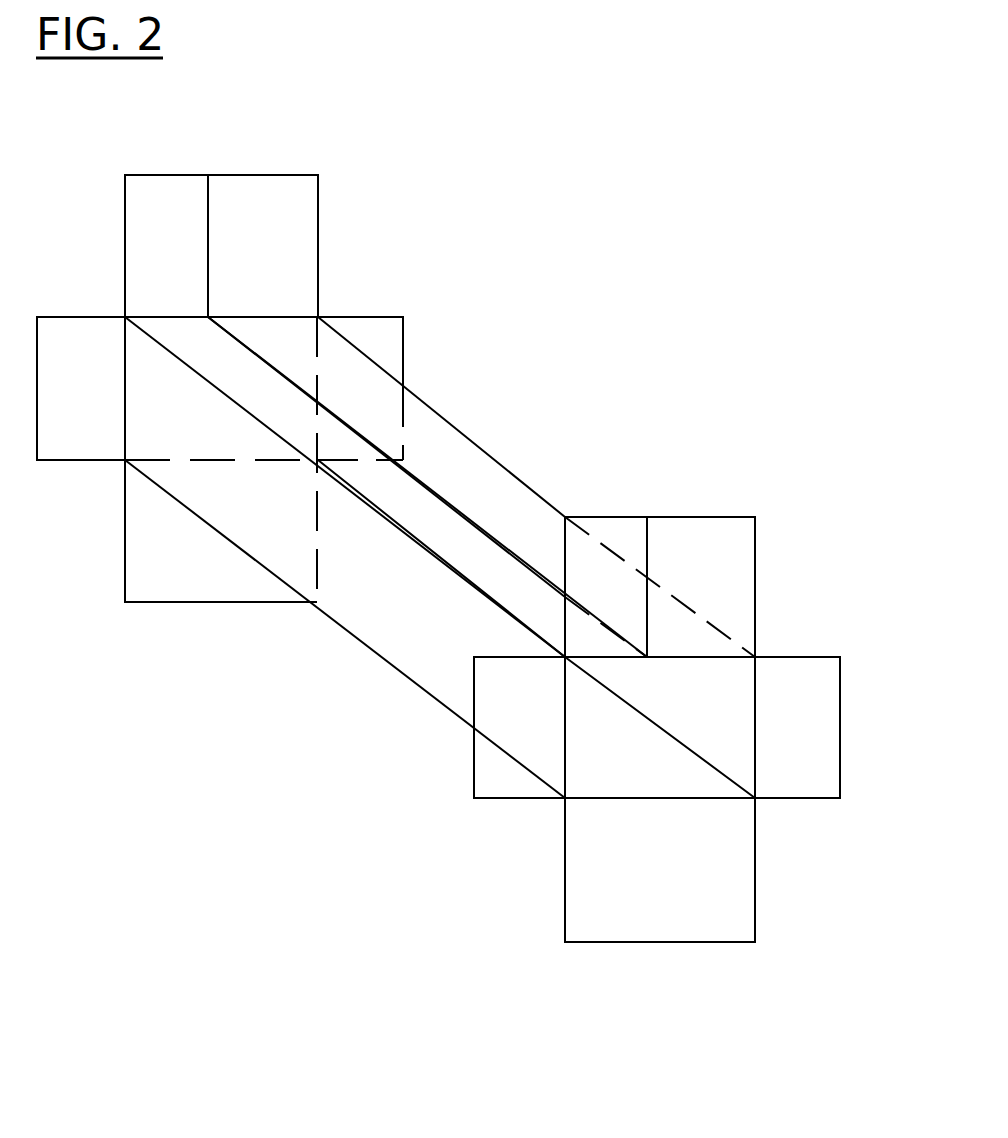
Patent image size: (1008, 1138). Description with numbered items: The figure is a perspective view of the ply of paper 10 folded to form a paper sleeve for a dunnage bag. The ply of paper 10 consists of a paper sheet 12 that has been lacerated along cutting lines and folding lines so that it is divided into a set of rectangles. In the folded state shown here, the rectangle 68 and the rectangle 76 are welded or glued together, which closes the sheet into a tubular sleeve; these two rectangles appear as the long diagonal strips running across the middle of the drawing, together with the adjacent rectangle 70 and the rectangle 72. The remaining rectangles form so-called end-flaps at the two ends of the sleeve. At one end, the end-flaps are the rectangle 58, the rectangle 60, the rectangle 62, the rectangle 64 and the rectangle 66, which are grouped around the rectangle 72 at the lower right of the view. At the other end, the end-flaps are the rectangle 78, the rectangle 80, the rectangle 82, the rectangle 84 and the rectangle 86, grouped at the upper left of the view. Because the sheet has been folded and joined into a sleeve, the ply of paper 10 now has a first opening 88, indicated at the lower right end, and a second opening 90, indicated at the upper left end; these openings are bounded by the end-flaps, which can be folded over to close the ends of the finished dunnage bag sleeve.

The ply of paper 10 is at (672, 163).
The paper sheet 12 is at (482, 443).
The rectangle 58 is at (606, 587).
The rectangle 60 is at (519, 727).
The rectangle 62 is at (660, 870).
The rectangle 64 is at (797, 727).
The rectangle 66 is at (701, 587).
The rectangle 68 is at (386, 487).
The rectangle 70 is at (440, 629).
The rectangle 72 is at (660, 727).
The rectangle 76 is at (481, 487).
The rectangle 78 is at (166, 246).
The rectangle 80 is at (81, 388).
The rectangle 82 is at (221, 531).
The rectangle 84 is at (360, 459).
The rectangle 86 is at (263, 246).
The first opening 88 is at (713, 720).
The second opening 90 is at (155, 385).